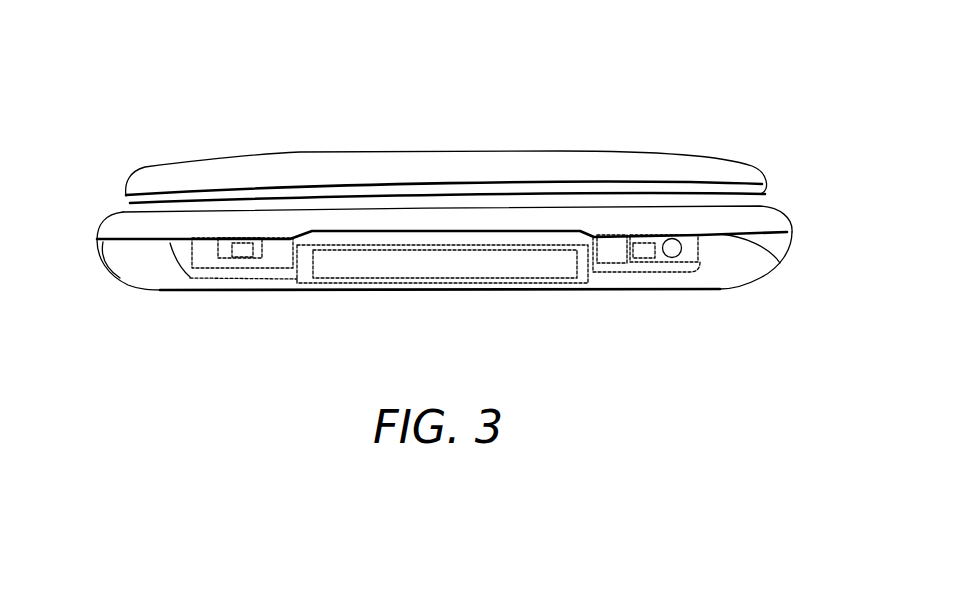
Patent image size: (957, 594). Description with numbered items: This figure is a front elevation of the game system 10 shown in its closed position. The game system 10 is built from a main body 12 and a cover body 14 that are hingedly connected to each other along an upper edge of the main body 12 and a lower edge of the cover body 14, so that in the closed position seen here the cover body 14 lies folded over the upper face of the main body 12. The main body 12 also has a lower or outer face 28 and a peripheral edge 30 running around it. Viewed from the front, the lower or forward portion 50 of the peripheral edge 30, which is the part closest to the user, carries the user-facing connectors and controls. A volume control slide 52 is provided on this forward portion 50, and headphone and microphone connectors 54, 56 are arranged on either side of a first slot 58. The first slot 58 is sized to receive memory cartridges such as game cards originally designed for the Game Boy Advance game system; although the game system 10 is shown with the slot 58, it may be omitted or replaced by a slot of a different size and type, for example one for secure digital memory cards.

The game system 10 is at (598, 119).
The main body 12 is at (789, 205).
The cover body 14 is at (458, 149).
The lower face 28 is at (232, 290).
The peripheral edge 30 is at (121, 283).
The forward portion of the peripheral edge 50 is at (733, 263).
The volume control slide 52 is at (238, 253).
The headphone connector 54 is at (673, 257).
The microphone connector 56 is at (647, 256).
The first slot 58 is at (447, 263).